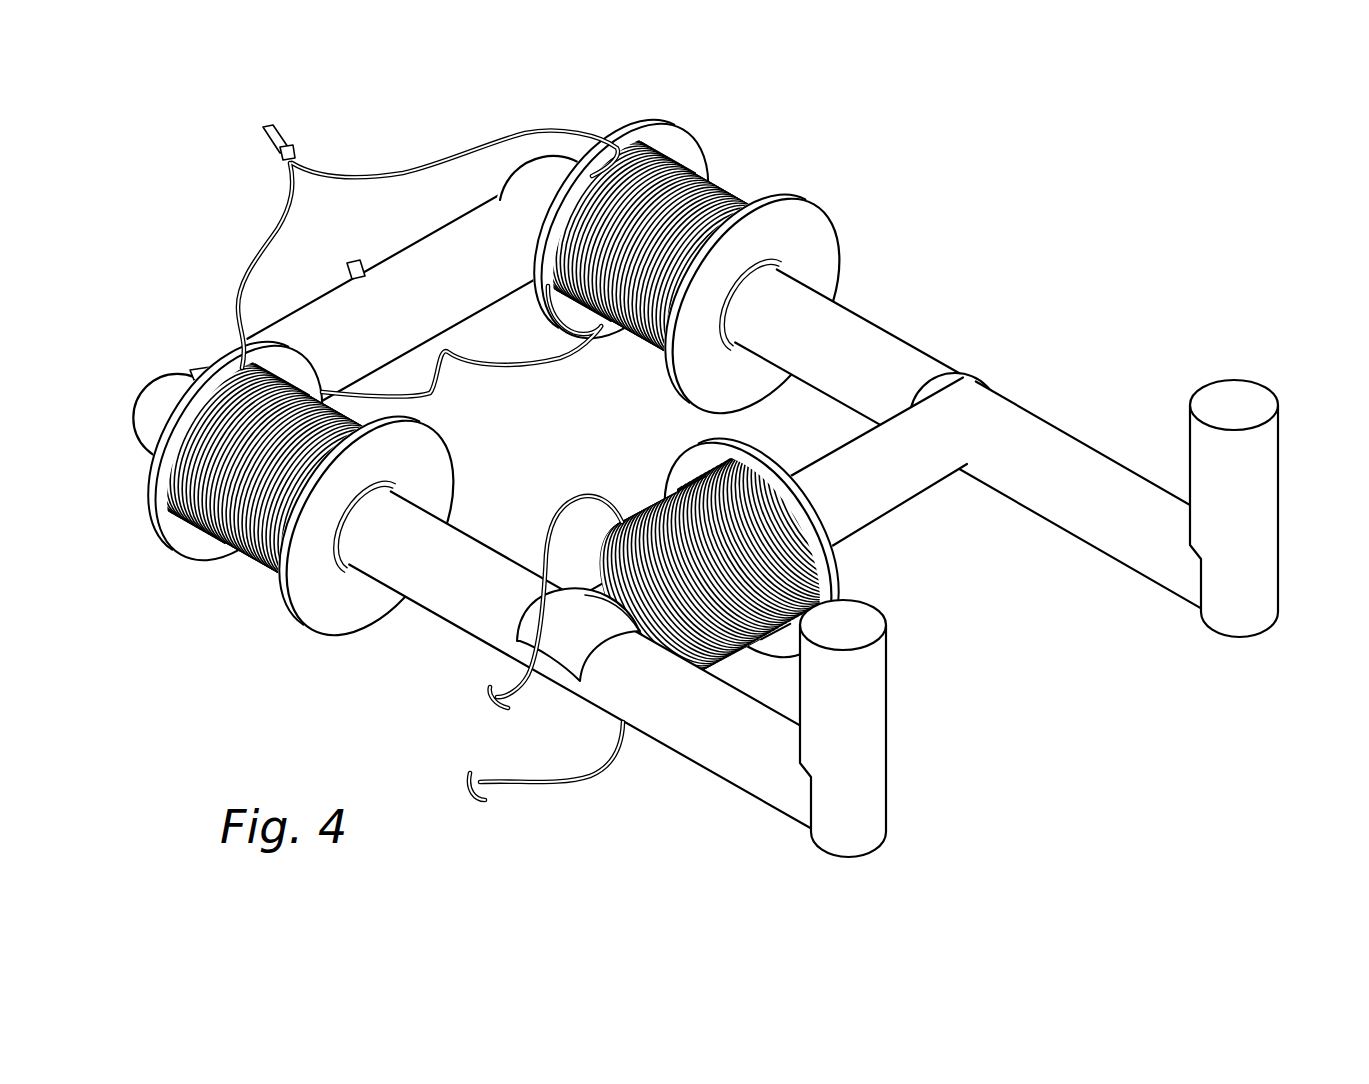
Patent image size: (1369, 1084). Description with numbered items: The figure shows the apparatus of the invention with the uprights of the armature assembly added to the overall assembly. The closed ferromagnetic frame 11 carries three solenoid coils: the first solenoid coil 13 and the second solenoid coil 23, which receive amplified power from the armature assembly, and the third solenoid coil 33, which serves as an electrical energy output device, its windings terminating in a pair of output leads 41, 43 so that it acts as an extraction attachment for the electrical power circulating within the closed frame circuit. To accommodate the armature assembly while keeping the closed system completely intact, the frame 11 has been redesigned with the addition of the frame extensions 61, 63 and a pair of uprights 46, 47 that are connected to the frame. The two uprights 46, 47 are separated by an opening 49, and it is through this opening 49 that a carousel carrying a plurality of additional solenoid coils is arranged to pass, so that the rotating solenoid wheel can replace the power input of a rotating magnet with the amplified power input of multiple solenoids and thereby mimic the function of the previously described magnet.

The closed frame 11 is at (860, 340).
The first solenoid coil 13 is at (231, 603).
The second solenoid coil 23 is at (762, 153).
The third solenoid coil 33 is at (617, 464).
The output lead 41 is at (523, 681).
The output lead 43 is at (524, 785).
The upright 46 is at (875, 744).
The upright 47 is at (1265, 466).
The opening 49 is at (1086, 691).
The frame extension 61 is at (742, 768).
The frame extension 63 is at (1095, 465).